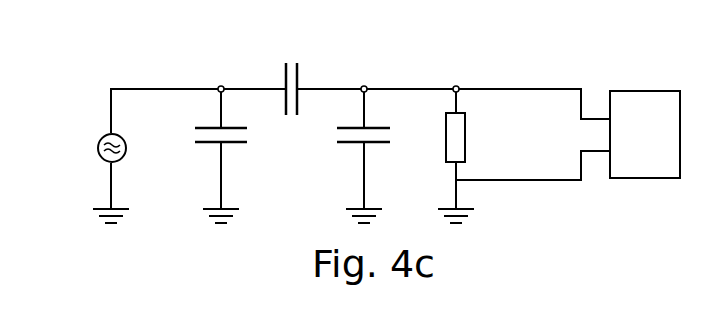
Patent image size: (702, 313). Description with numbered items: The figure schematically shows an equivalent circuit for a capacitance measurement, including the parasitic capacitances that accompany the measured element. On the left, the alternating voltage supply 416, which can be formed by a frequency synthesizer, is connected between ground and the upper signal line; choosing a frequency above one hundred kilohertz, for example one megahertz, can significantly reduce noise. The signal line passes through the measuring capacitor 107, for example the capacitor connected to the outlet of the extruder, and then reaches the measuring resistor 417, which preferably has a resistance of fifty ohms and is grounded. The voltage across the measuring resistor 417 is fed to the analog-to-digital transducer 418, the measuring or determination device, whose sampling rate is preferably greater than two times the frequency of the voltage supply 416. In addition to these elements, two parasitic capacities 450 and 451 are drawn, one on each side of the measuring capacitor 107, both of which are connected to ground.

The alternating voltage supply 416 is at (99, 144).
The parasitic capacity 451 is at (193, 136).
The measuring capacitor 107 is at (295, 66).
The parasitic capacity 450 is at (337, 136).
The measuring resistor 417 is at (466, 133).
The analog-to-digital transducer 418 is at (645, 91).